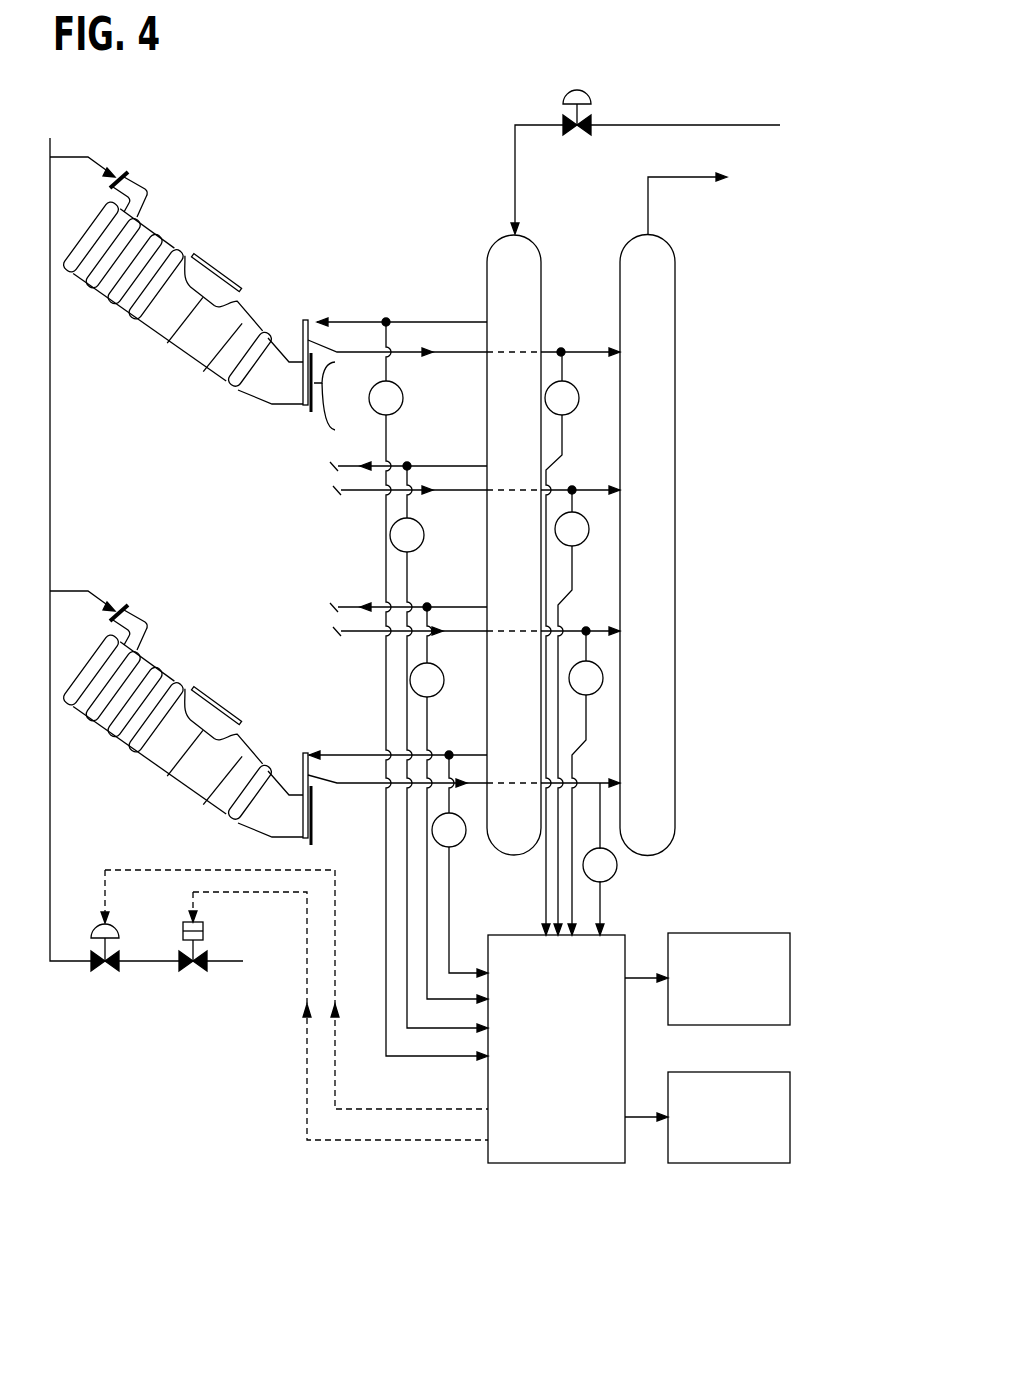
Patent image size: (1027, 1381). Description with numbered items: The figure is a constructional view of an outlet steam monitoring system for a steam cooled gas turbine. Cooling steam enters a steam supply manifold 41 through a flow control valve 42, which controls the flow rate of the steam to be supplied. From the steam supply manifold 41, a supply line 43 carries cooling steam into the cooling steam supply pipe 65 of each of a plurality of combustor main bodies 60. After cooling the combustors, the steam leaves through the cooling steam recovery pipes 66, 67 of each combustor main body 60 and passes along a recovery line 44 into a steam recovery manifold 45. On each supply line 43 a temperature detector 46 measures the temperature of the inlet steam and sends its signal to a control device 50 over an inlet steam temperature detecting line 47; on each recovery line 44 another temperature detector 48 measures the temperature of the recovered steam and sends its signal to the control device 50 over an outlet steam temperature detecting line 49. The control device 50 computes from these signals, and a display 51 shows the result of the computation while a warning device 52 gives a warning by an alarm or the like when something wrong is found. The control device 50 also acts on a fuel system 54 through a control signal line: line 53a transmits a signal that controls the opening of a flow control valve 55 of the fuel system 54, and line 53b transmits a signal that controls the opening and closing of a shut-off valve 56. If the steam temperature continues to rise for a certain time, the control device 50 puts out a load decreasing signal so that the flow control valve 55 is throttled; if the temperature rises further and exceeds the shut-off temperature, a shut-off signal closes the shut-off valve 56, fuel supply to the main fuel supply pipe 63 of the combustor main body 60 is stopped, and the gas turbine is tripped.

The steam supply manifold 41 is at (487, 252).
The flow control valve 42 is at (563, 95).
The supply line 43 is at (424, 321).
The recovery line 44 is at (440, 354).
The steam recovery manifold 45 is at (672, 248).
The temperature detector 46 is at (400, 410).
The inlet steam temperature detecting line 47 is at (410, 1058).
The temperature detector 48 is at (576, 410).
The outlet steam temperature detecting line 49 is at (545, 870).
The control device 50 is at (488, 1163).
The display 51 is at (708, 933).
The warning device 52 is at (708, 1072).
The control signal line 53a is at (175, 868).
The control signal line 53b is at (307, 1065).
The fuel system 54 is at (53, 963).
The flow control valve 55 is at (105, 970).
The shut-off valve 56 is at (193, 970).
The combustor main body 60 is at (167, 240).
The main fuel supply pipe 63 is at (117, 170).
The cooling steam supply pipe 65 is at (303, 320).
The cooling steam recovery pipe 66 is at (297, 772).
The cooling steam recovery pipe 67 is at (341, 411).